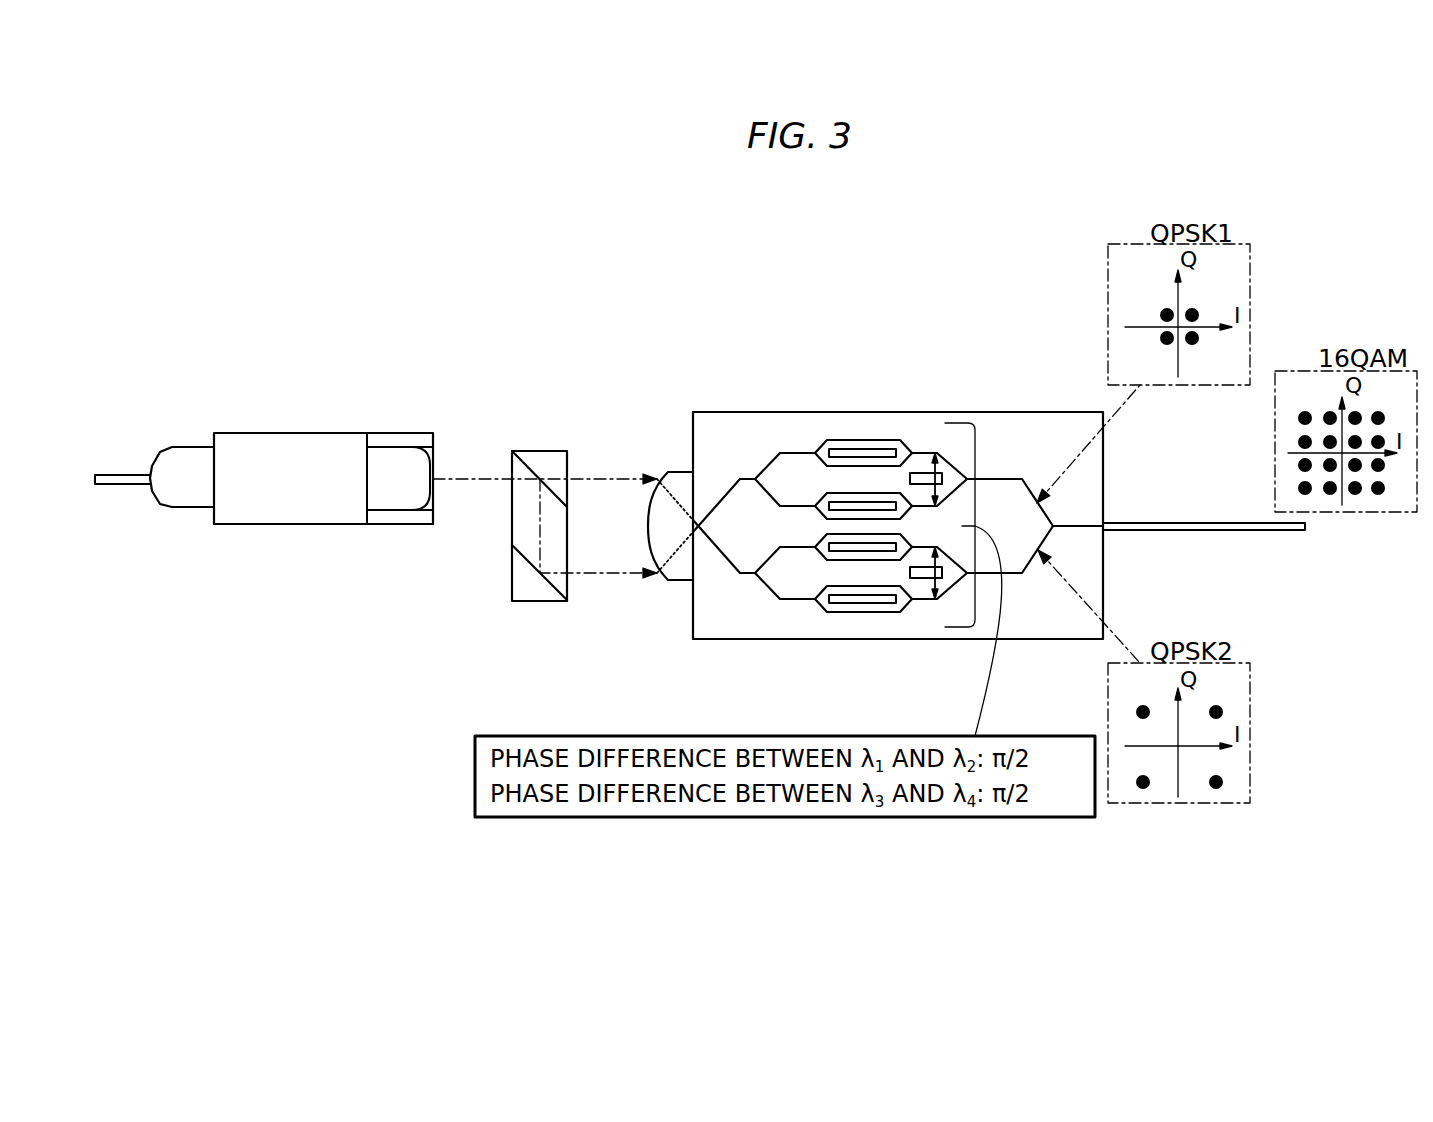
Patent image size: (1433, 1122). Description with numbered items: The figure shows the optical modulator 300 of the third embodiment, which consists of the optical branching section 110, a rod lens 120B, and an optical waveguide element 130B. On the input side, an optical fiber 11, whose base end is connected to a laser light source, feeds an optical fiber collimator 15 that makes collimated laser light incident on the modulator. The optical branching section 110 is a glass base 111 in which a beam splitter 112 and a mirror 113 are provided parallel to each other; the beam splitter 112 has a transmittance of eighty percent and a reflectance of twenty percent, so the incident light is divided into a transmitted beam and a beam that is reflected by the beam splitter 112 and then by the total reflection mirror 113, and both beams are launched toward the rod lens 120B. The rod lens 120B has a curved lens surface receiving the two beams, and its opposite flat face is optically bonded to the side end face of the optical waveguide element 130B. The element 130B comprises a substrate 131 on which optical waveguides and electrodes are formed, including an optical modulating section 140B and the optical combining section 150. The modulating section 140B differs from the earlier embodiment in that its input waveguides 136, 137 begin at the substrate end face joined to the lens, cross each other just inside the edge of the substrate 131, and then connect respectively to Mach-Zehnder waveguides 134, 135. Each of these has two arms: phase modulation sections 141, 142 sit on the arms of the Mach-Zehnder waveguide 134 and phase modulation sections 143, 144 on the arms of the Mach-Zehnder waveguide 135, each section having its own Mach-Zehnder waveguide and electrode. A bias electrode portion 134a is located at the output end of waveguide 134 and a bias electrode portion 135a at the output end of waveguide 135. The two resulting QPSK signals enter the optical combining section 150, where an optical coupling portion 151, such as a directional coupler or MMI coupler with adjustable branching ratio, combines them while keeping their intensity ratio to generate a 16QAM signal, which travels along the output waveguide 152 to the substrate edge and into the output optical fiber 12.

The optical modulator 300 is at (935, 222).
The optical fiber collimator 15 is at (297, 420).
The optical fiber 11 is at (114, 476).
The optical branching section 110 is at (552, 435).
The glass base 111 is at (535, 602).
The beam splitter 112 is at (522, 458).
The mirror 113 is at (527, 560).
The rod lens 120B is at (677, 458).
The optical waveguide element 130B is at (1055, 262).
The substrate 131 is at (1085, 638).
The input waveguide 136 is at (706, 517).
The input waveguide 137 is at (722, 553).
The optical modulating section 140B is at (850, 301).
The Mach-Zehnder waveguide 134 is at (792, 440).
The Mach-Zehnder waveguide 135 is at (763, 553).
The phase modulation section 141 is at (867, 447).
The phase modulation section 142 is at (820, 494).
The phase modulation section 143 is at (868, 560).
The phase modulation section 144 is at (847, 606).
The bias electrode portion 134a is at (920, 474).
The bias electrode portion 135a is at (920, 580).
The optical combining section 150 is at (1095, 301).
The optical coupling portion 151 is at (1056, 506).
The output waveguide 152 is at (1087, 524).
The optical fiber 12 is at (1272, 531).